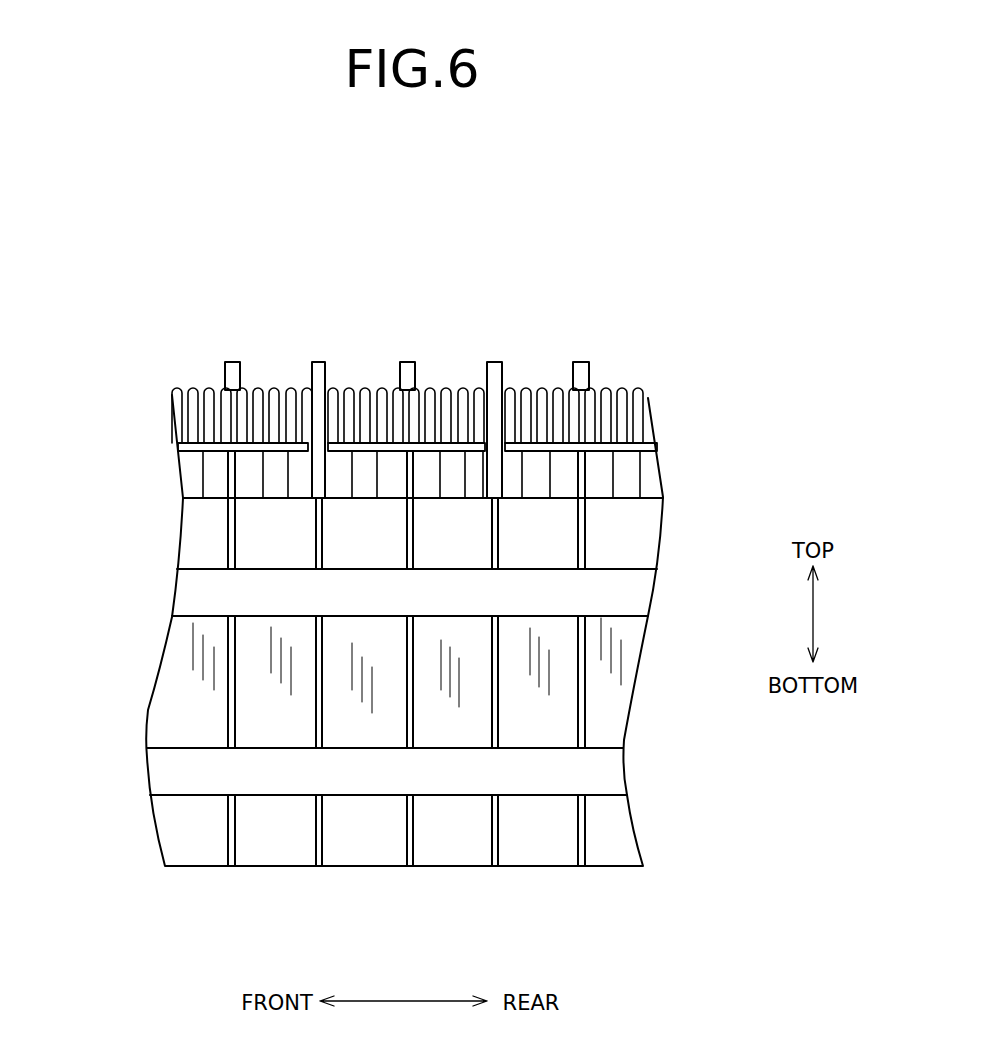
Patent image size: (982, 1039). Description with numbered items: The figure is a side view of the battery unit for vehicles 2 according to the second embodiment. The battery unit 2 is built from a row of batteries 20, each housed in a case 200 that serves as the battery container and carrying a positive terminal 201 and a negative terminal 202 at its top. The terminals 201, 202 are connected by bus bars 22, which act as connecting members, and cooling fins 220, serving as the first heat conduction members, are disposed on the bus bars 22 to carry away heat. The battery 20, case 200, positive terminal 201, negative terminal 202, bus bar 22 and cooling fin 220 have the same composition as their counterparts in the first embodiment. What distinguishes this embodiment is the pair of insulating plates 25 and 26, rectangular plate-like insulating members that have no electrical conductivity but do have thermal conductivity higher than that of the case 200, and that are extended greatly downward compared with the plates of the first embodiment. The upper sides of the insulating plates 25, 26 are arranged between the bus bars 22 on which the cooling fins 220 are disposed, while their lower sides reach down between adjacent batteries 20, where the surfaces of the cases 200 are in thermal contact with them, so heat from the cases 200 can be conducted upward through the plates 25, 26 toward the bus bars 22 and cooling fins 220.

The battery unit for vehicles 2 is at (512, 246).
The battery 20 is at (202, 868).
The bus bar 22 is at (605, 447).
The insulating plate 25 is at (494, 362).
The insulating plate 26 is at (581, 362).
The case 200 is at (353, 705).
The positive terminal 201 is at (273, 487).
The negative terminal 202 is at (182, 483).
The cooling fin 220 is at (547, 387).